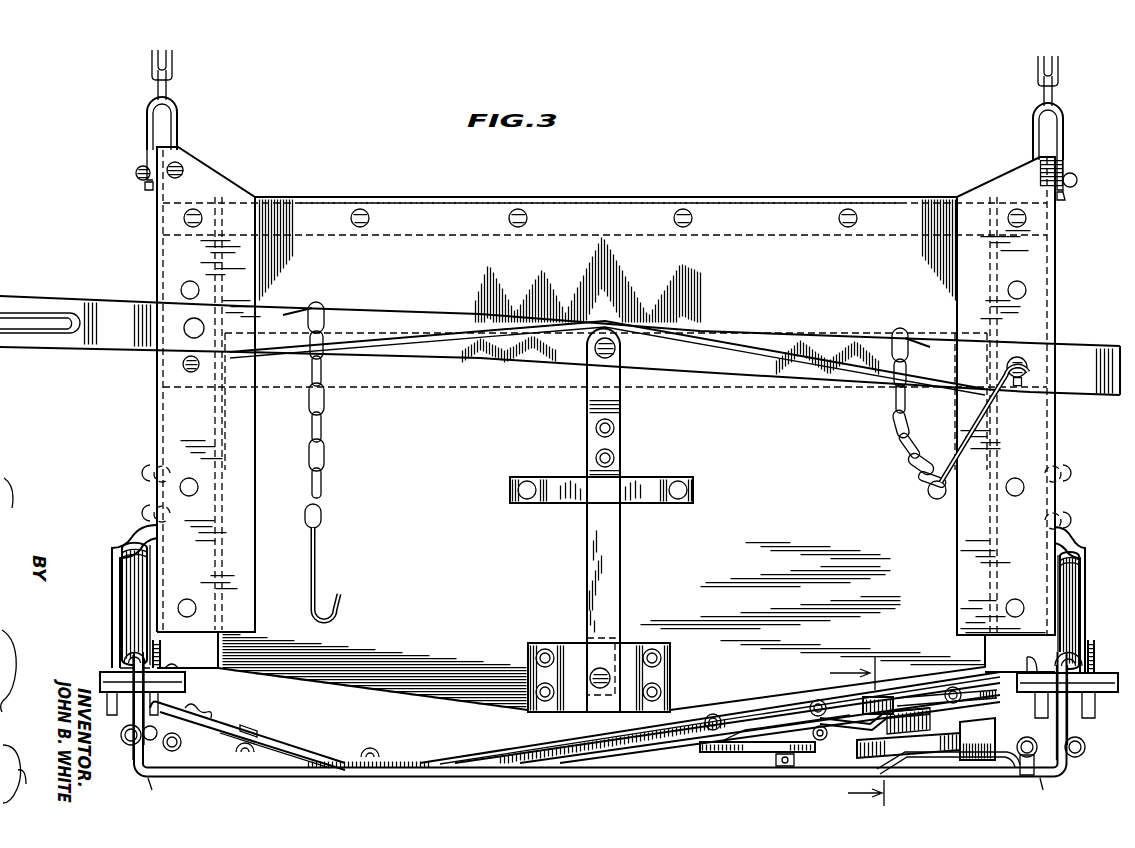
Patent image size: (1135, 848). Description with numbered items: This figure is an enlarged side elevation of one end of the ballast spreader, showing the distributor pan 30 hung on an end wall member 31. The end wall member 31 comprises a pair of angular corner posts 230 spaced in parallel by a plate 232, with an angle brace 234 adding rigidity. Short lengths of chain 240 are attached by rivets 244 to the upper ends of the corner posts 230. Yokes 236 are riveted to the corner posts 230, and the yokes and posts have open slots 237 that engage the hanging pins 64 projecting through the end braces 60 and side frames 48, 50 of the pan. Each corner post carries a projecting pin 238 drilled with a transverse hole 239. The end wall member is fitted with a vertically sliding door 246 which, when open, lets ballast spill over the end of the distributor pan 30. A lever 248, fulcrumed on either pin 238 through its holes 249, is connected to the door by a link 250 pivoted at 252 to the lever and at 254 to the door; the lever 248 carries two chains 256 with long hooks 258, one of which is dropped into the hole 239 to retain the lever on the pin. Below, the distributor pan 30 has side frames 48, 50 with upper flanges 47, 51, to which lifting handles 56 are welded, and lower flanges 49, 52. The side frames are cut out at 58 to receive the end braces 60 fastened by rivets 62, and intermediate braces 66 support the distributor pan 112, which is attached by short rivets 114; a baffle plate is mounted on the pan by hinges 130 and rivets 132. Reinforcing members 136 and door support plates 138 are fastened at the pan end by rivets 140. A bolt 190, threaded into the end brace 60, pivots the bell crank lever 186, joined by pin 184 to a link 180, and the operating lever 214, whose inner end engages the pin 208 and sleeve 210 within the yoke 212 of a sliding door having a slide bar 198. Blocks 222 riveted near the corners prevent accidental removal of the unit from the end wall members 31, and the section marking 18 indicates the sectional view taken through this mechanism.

The short length of chain 240 is at (165, 78).
The rivet 244 is at (140, 168).
The plate 232 is at (340, 238).
The angle brace 234 is at (738, 200).
The corner post 230 is at (153, 232).
The hole 249 is at (185, 320).
The projecting pin 238 is at (181, 364).
The transverse hole 239 is at (160, 380).
The end wall member 31 is at (142, 422).
The lever 248 is at (765, 347).
The pivot connection 252 is at (618, 350).
The chain 256 is at (324, 412).
The long hook 258 is at (316, 568).
The link 250 is at (612, 560).
The door pivot 254 is at (612, 670).
The door 246 is at (382, 680).
The yoke 236 is at (112, 545).
The lifting handle 56 is at (122, 557).
The upper flange 47 is at (132, 652).
The upper flange 51 is at (1068, 652).
The open slot 237 is at (128, 655).
The hanging pin 64 is at (102, 676).
The block 222 is at (166, 666).
The rivet 132 is at (210, 708).
The hinge 130 is at (222, 722).
The short rivet 114 is at (250, 740).
The distributor pan 112 is at (303, 750).
The reinforcing member 136 is at (497, 755).
The door support plate 138 is at (580, 745).
The rivet 140 is at (705, 720).
The bolt 190 is at (893, 700).
The link 180 is at (990, 728).
The section line 18 is at (867, 731).
The side frame 48 is at (134, 712).
The side frame 50 is at (1068, 728).
The lower flange 49 is at (181, 742).
The rivet 62 is at (126, 746).
The cut-out 58 is at (601, 794).
The intermediate brace 66 is at (232, 752).
The distributor pan 30 is at (400, 790).
The slide bar 198 is at (560, 760).
The end brace 60 is at (580, 775).
The yoke 212 is at (724, 755).
The sleeve 210 is at (782, 767).
The pin 208 is at (787, 766).
The operating lever 214 is at (842, 738).
The bell crank lever 186 is at (925, 760).
The pin 184 is at (975, 762).
The lower flange 52 is at (1027, 768).